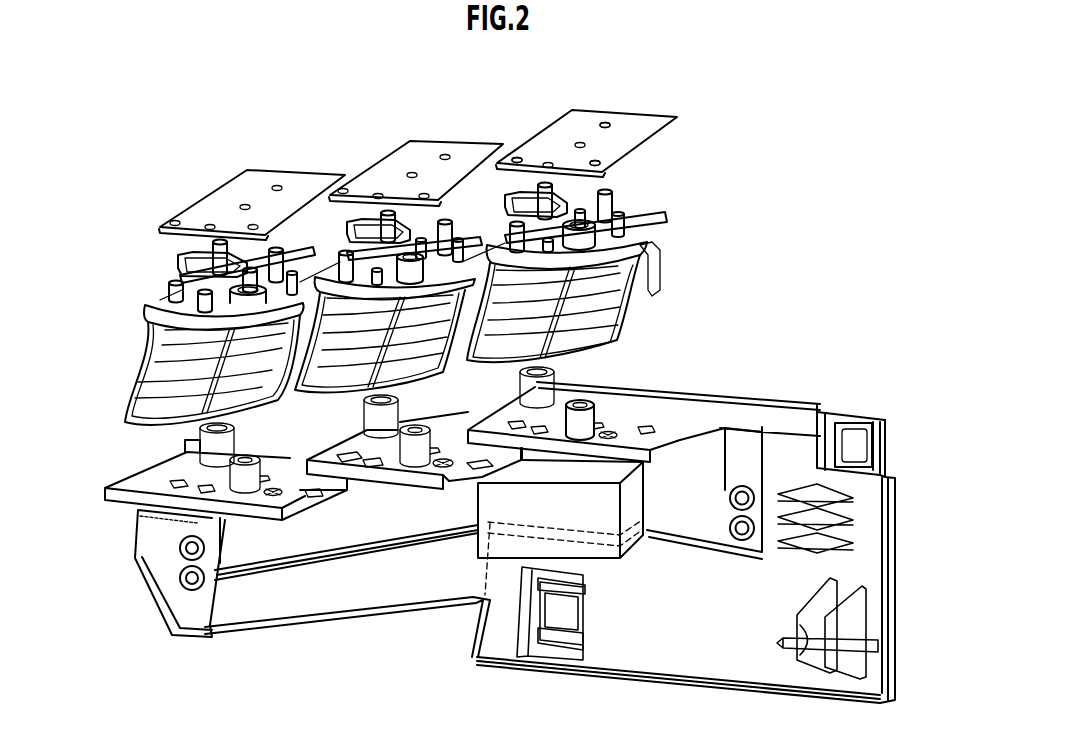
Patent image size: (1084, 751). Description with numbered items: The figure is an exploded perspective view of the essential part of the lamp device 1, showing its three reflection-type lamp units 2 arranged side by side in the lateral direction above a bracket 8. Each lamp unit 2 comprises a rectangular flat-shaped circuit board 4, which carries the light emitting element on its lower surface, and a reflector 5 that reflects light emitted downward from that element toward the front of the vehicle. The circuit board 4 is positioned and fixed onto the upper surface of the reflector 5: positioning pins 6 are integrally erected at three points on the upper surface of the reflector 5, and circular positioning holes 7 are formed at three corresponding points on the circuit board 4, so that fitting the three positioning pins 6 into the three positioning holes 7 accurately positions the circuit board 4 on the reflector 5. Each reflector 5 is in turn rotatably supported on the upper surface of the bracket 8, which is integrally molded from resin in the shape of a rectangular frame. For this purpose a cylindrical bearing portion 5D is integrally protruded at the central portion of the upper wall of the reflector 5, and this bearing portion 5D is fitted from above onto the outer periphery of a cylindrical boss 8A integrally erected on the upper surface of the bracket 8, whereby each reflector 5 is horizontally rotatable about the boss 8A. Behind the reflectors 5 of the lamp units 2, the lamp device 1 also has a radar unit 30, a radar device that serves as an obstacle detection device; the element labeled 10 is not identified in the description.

The lamp device 1 is at (346, 128).
The lamp unit 2 is at (148, 298).
The circuit board 4 is at (215, 199).
The reflector 5 is at (278, 402).
The bearing portion 5D is at (598, 231).
The positioning pin 6 is at (607, 200).
The positioning hole 7 is at (516, 154).
The bracket 8 is at (761, 400).
The boss 8A is at (602, 407).
The heat sink 10 is at (540, 186).
The radar unit 30 is at (607, 561).